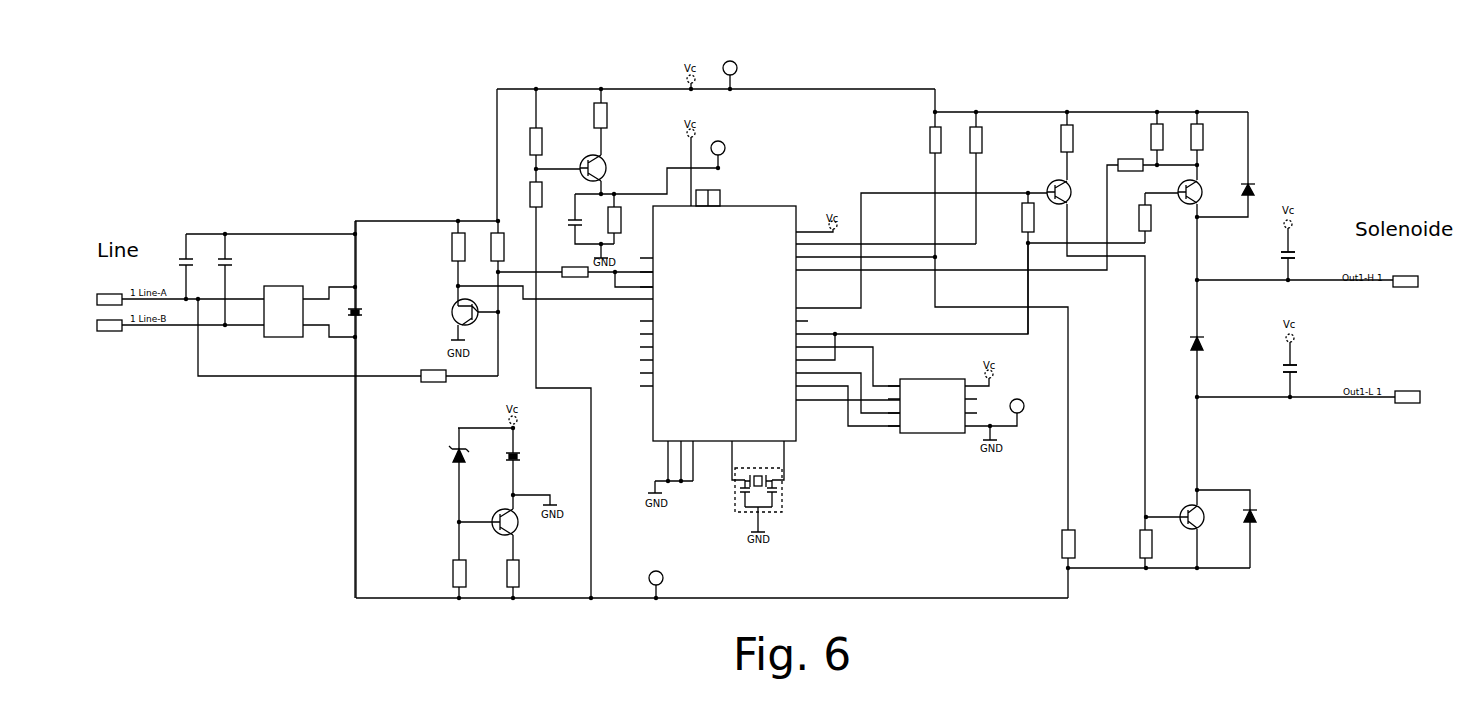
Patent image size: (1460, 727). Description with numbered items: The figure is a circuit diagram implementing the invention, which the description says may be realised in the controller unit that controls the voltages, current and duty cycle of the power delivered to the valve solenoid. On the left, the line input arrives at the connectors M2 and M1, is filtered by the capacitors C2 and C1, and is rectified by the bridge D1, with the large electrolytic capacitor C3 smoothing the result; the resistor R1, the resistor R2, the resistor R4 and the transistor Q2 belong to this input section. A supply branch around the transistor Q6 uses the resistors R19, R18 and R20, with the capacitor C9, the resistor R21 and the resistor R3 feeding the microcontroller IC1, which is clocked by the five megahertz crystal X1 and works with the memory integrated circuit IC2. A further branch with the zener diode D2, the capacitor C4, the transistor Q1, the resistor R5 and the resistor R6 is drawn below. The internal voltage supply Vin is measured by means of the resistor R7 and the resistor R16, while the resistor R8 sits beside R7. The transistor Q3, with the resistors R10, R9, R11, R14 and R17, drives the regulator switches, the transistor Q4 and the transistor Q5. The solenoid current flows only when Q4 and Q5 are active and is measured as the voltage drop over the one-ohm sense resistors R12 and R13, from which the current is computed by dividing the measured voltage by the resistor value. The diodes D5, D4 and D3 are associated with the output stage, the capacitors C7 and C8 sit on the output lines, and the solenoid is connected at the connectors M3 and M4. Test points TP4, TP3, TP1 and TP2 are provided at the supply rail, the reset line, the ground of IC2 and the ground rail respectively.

The 1N0 capacitor C1 is at (235, 261).
The 1N0 capacitor C2 is at (196, 261).
The 470UF capacitor C3 is at (370, 409).
The 1UF capacitor C4 is at (525, 451).
The 1N0 capacitor C7 is at (1298, 254).
The 1N0 capacitor C8 is at (1300, 370).
The 1N0 capacitor C9 is at (585, 222).
The DF4SB diode D1 is at (285, 312).
The 4V7 diode D2 is at (468, 455).
The BYD17 diode D3 is at (1266, 517).
The BYD17 diode D4 is at (1214, 344).
The BYD17 diode D5 is at (1265, 189).
The BC856 transistor Q1 is at (522, 522).
The BC846 transistor Q2 is at (482, 308).
The BC856 transistor Q3 is at (1077, 192).
The MJD127 transistor Q4 is at (1210, 192).
The MJD122 transistor Q5 is at (1211, 517).
The BC856 transistor Q6 is at (611, 168).
The 470K resistor R1 is at (434, 376).
The 220K resistor R2 is at (511, 247).
The 470K resistor R3 is at (576, 273).
The 100K resistor R4 is at (472, 247).
The 220K resistor R5 is at (474, 573).
The 1K0 resistor R6 is at (523, 573).
The 68K resistor R7 is at (947, 140).
The 68K resistor R8 is at (987, 140).
The 10K resistor R9 is at (1039, 217).
The 1K5 resistor R10 is at (1078, 133).
The 10K0 resistor R11 is at (1133, 165).
The 1R0 resistor R12 is at (1168, 137).
The 1R0 resistor R13 is at (1207, 137).
The 1K5 resistor R14 is at (1155, 218).
The 680K resistor R16 is at (1083, 544).
The 2K7 resistor R17 is at (1157, 544).
The 470K resistor R18 is at (550, 194).
The 47K resistor R19 is at (547, 141).
The 14K3 resistor R20 is at (615, 115).
The 100K resistor R21 is at (628, 220).
The UPD780101 integrated circuit IC1 is at (746, 326).
The 93C46 integrated circuit IC2 is at (932, 407).
The 5 MHZ crystal X1 is at (775, 490).
The test point TP1 is at (1019, 397).
The test point TP2 is at (657, 566).
The test point TP3 is at (718, 137).
The test point TP4 is at (731, 58).
The line-B connector M1 is at (109, 319).
The line-A connector M2 is at (109, 293).
The Out1-H solenoid connector M3 is at (1405, 275).
The Out1-L solenoid connector M4 is at (1407, 390).